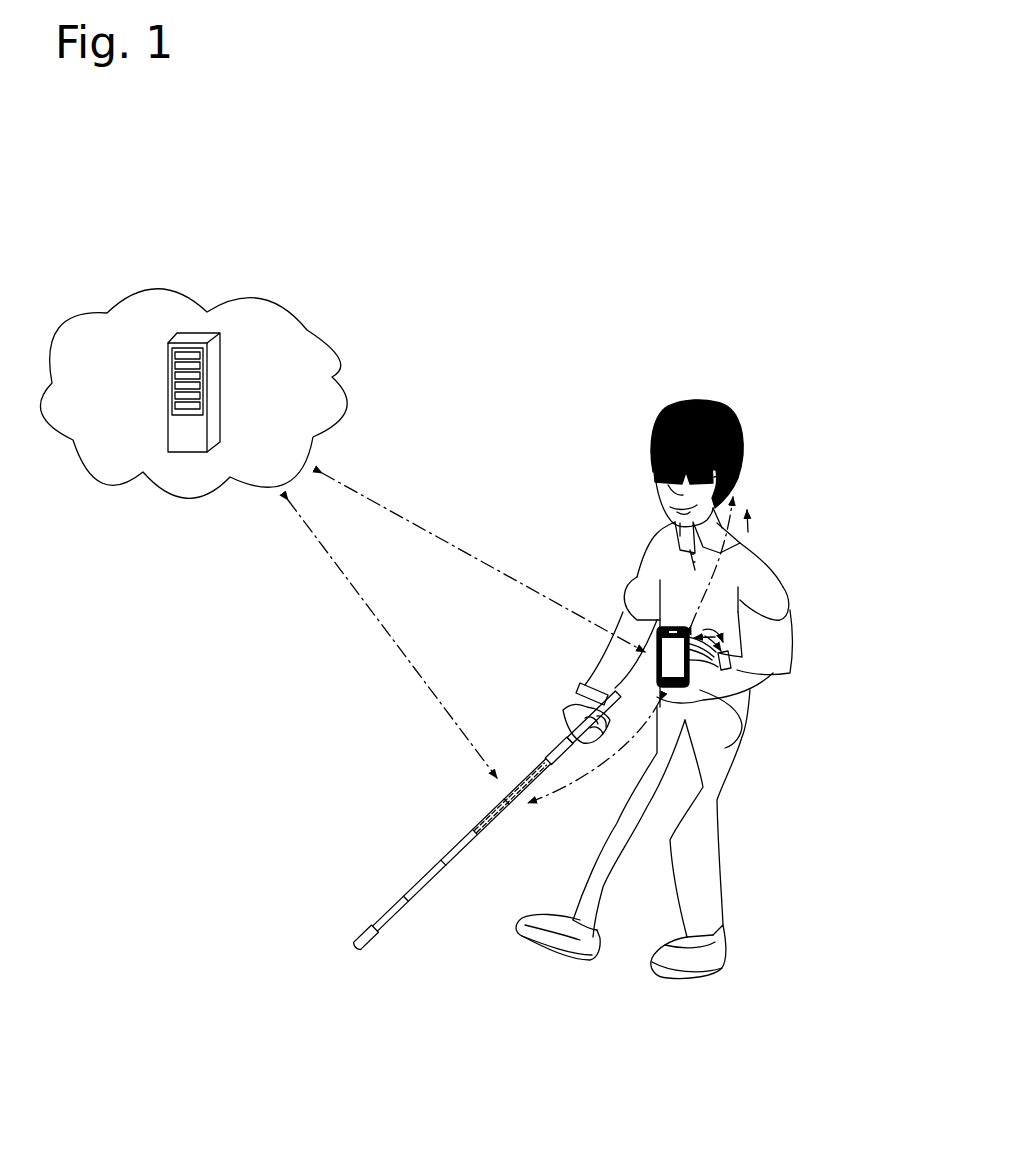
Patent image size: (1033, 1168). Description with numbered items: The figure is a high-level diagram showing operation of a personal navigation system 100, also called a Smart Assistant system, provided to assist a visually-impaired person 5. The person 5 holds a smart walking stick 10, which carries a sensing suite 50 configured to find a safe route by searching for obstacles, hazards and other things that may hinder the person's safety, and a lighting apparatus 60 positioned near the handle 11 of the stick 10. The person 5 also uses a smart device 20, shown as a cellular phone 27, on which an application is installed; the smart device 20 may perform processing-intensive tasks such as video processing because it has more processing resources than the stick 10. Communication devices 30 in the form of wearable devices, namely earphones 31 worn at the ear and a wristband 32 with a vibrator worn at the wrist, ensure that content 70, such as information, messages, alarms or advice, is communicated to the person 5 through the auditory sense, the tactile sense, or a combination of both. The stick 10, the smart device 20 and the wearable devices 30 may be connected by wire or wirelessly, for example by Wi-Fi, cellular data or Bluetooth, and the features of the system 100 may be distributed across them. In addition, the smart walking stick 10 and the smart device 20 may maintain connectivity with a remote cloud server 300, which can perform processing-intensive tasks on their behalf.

The personal navigation system 100 is at (625, 410).
The visually-impaired person 5 is at (593, 455).
The smart walking stick 10 is at (463, 852).
The handle 11 is at (568, 733).
The smart device 20 is at (660, 630).
The cellular phone 27 is at (737, 742).
The communication devices 30 is at (782, 492).
The earphones 31 is at (737, 472).
The wristband 32 is at (590, 686).
The sensing suite 50 is at (470, 828).
The lighting apparatus 60 is at (550, 752).
The content 70 is at (752, 530).
The remote server 300 is at (220, 384).